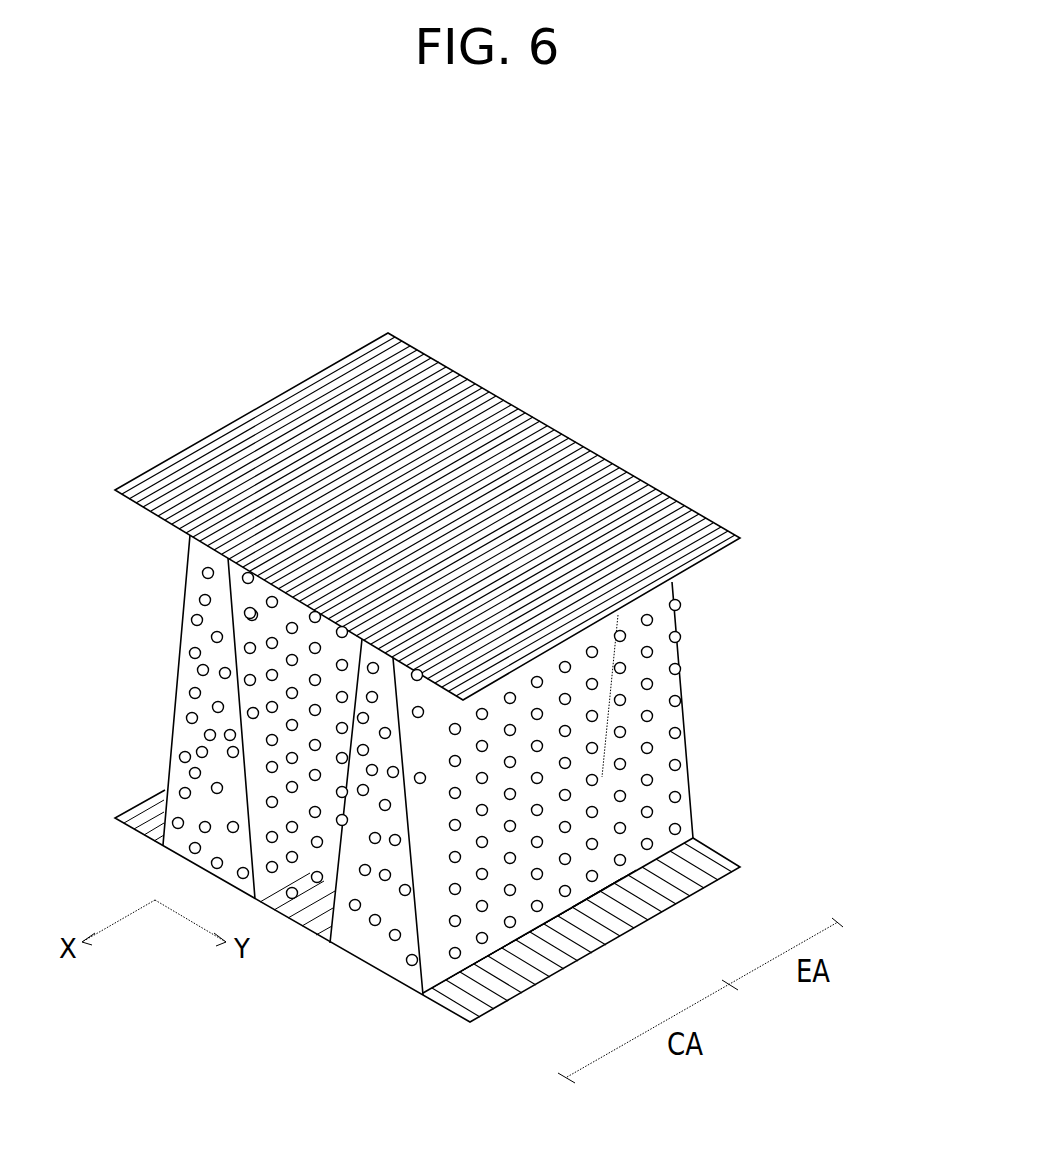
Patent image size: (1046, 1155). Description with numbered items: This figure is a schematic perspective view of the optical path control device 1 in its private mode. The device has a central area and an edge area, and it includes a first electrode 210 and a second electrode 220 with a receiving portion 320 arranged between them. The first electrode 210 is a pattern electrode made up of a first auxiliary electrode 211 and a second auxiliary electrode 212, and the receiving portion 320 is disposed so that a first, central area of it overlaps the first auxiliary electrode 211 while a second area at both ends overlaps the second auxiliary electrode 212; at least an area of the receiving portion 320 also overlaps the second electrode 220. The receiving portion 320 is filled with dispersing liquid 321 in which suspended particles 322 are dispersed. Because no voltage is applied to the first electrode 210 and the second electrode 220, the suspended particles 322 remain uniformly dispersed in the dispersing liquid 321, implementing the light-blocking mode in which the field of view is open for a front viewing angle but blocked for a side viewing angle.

The optical path control device 1 is at (640, 436).
The second electrode 220 is at (710, 527).
The first electrode 210 is at (526, 904).
The first auxiliary electrode 211 is at (617, 907).
The second auxiliary electrode 212 is at (740, 862).
The receiving portion 320 is at (522, 765).
The dispersing liquid 321 is at (672, 655).
The suspended particles 322 is at (683, 700).